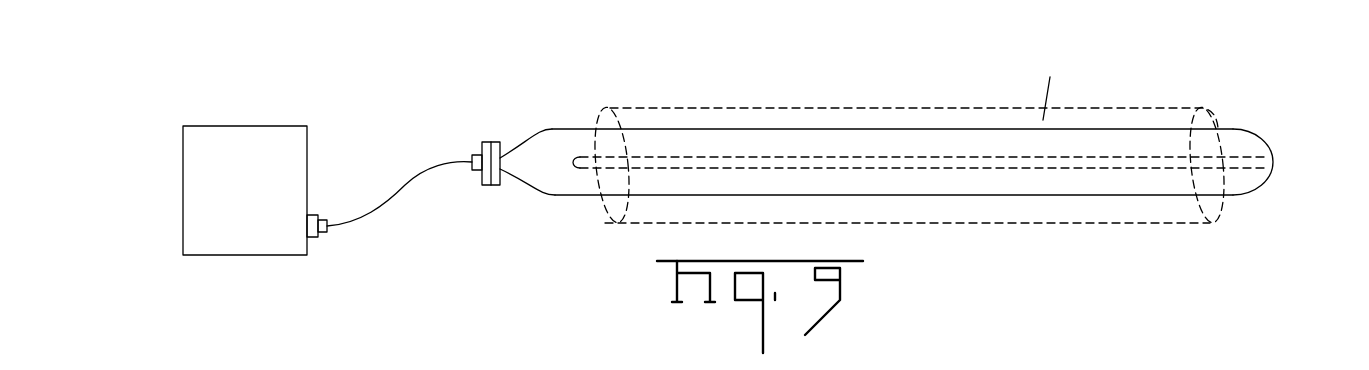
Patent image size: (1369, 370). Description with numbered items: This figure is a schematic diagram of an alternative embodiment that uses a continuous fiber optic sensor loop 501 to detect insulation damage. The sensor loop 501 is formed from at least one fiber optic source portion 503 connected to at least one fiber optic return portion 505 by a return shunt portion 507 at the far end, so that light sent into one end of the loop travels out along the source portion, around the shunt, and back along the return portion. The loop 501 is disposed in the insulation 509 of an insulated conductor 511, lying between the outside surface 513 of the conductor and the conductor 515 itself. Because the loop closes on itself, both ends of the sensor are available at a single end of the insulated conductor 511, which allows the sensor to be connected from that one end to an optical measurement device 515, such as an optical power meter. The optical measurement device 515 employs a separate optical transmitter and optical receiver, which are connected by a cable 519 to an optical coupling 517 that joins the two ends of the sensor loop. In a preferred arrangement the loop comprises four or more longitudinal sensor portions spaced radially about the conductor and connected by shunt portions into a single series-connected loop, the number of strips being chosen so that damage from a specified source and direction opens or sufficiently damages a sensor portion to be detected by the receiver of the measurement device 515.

The fiber optic sensor loop 501 is at (562, 203).
The fiber optic source portion 503 is at (748, 128).
The fiber optic return portion 505 is at (907, 195).
The return shunt portion 507 is at (1233, 128).
The insulation 509 is at (1062, 81).
The insulated conductor 511 is at (1073, 223).
The outside surface 513 is at (830, 107).
The optical measurement device 515 is at (182, 187).
The optical coupling 517 is at (490, 142).
The cable 519 is at (402, 187).